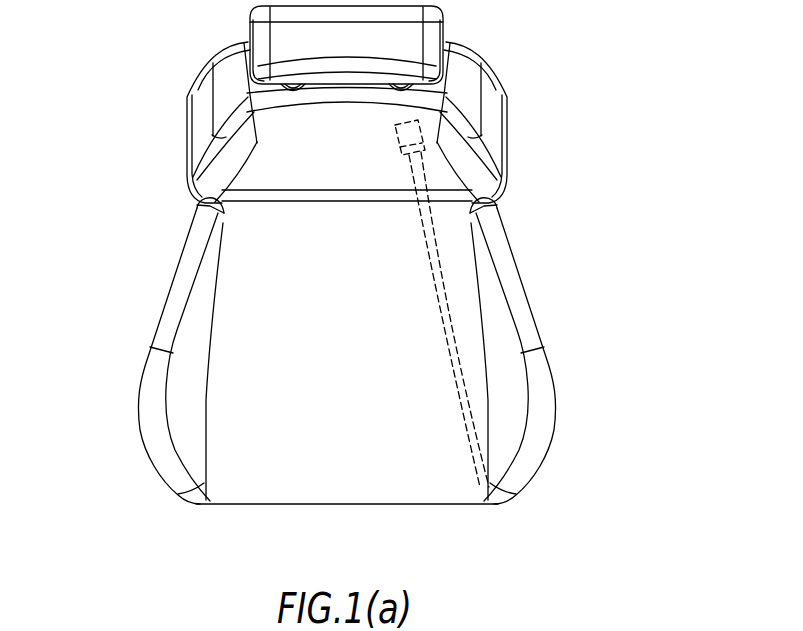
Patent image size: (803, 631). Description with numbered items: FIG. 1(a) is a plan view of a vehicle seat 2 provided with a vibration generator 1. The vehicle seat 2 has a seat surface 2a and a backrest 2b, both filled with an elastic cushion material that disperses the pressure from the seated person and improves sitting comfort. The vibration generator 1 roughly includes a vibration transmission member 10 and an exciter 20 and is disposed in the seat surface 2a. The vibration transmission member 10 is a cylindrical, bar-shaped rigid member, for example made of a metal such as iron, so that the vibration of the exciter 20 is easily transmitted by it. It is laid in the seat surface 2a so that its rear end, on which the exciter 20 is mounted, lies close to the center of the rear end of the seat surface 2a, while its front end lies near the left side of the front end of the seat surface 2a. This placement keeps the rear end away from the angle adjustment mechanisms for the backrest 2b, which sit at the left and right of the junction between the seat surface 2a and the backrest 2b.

The vibration generator 1 is at (403, 303).
The vibration transmission member 10 is at (449, 366).
The exciter 20 is at (397, 141).
The vehicle seat 2 is at (297, 290).
The seat surface 2a is at (327, 492).
The backrest 2b is at (210, 157).